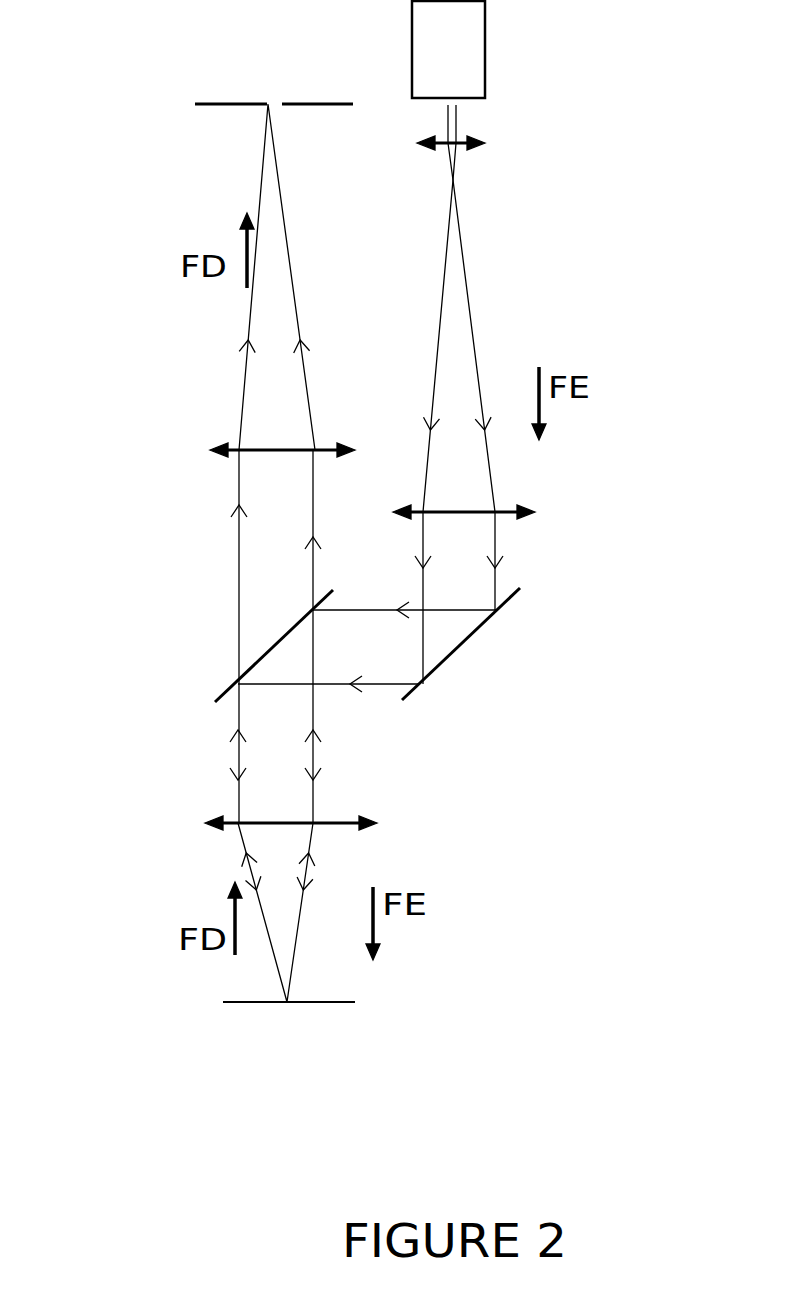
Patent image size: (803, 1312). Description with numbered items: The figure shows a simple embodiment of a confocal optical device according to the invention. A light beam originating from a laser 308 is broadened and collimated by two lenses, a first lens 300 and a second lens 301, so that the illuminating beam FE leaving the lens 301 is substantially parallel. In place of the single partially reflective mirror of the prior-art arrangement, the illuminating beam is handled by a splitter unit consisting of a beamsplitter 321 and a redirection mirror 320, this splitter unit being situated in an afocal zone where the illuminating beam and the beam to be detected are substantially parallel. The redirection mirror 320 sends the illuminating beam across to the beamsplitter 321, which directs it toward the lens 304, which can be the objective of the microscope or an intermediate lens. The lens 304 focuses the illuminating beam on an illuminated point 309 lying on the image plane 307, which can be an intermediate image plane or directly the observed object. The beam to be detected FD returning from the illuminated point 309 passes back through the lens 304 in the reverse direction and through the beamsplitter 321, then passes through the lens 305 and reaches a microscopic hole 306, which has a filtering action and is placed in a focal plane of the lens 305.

The lens 300 is at (523, 170).
The lens 301 is at (542, 544).
The lens 304 is at (207, 869).
The lens 305 is at (224, 392).
The microscopic hole 306 is at (216, 63).
The image plane 307 is at (216, 1050).
The laser 308 is at (528, 49).
The illuminated point 309 is at (350, 962).
The redirection mirror 320 is at (512, 644).
The beamsplitter 321 is at (225, 619).